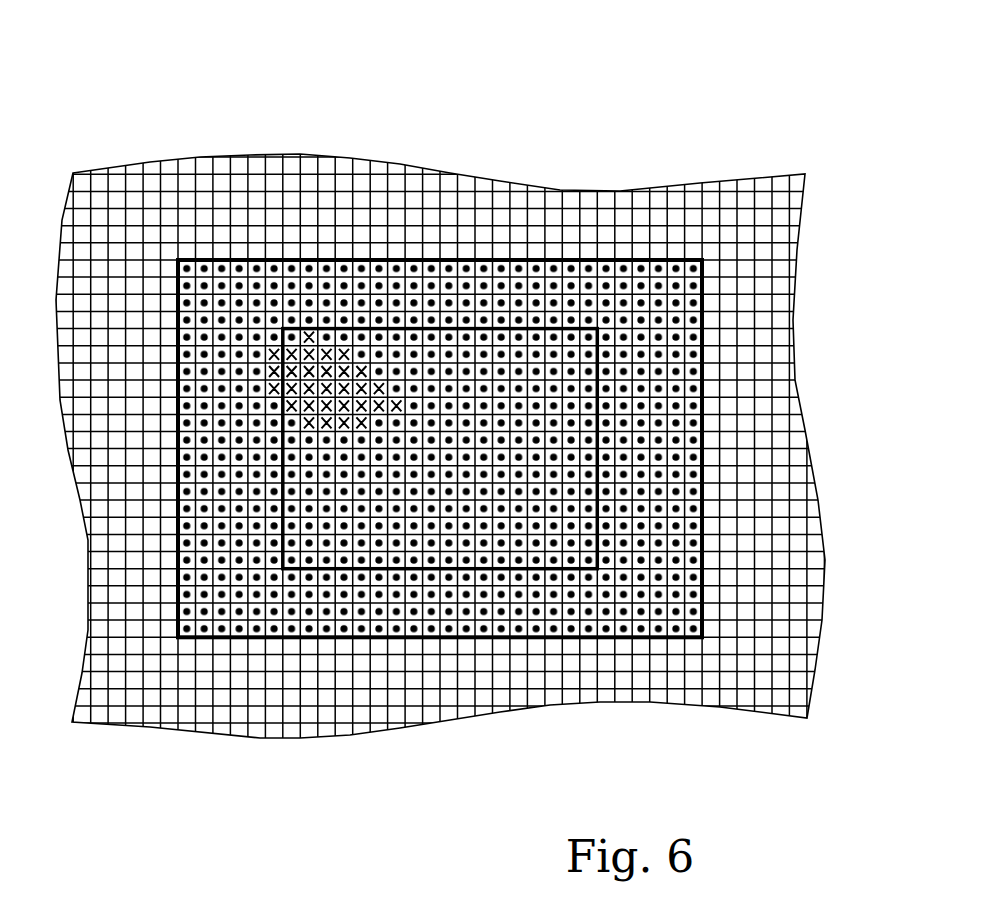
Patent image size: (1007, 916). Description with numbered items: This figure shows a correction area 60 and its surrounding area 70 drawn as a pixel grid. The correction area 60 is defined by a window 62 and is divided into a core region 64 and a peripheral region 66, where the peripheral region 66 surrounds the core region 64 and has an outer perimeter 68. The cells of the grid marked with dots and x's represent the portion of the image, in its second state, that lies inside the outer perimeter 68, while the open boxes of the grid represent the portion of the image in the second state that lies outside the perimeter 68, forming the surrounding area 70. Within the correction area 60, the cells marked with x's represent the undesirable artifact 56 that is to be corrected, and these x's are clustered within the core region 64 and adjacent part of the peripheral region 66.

The undesirable artifact 56 is at (337, 327).
The correction area 60 is at (712, 302).
The window 62 is at (178, 543).
The core region 64 is at (620, 480).
The peripheral region 66 is at (642, 291).
The outer perimeter 68 is at (703, 403).
The surrounding area 70 is at (726, 675).